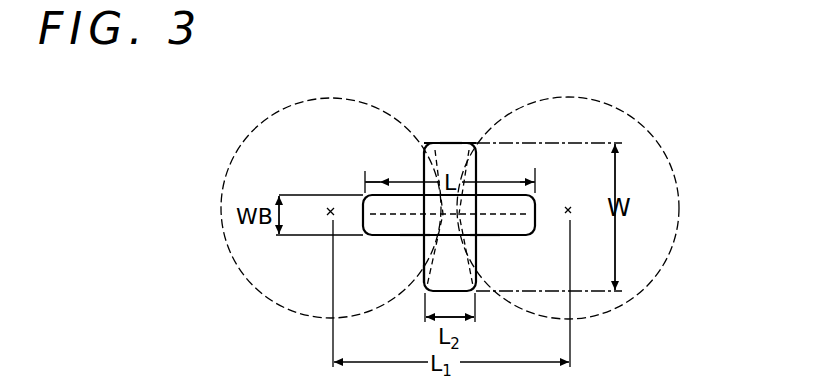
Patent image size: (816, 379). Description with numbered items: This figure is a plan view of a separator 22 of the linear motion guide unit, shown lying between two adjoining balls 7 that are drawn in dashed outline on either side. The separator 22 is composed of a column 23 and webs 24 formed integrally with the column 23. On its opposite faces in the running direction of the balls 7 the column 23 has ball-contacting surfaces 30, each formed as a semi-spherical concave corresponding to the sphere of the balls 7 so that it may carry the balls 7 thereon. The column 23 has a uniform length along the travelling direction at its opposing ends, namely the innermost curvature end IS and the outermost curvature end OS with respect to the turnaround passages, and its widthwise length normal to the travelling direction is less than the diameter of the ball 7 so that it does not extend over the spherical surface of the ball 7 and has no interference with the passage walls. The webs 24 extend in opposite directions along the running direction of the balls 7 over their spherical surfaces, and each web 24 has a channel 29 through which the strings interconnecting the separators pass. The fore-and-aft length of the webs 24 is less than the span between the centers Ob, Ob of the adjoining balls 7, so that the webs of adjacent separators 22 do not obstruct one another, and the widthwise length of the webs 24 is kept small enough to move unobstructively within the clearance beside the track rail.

The ball 7 is at (265, 156).
The separator 22 is at (468, 140).
The column 23 is at (442, 160).
The web 24 is at (394, 204).
The channel 29 is at (413, 223).
The ball-contacting surface 30 is at (467, 220).
The innermost curvature end IS is at (453, 141).
The outermost curvature end OS is at (424, 280).
The center of ball Ob is at (444, 204).